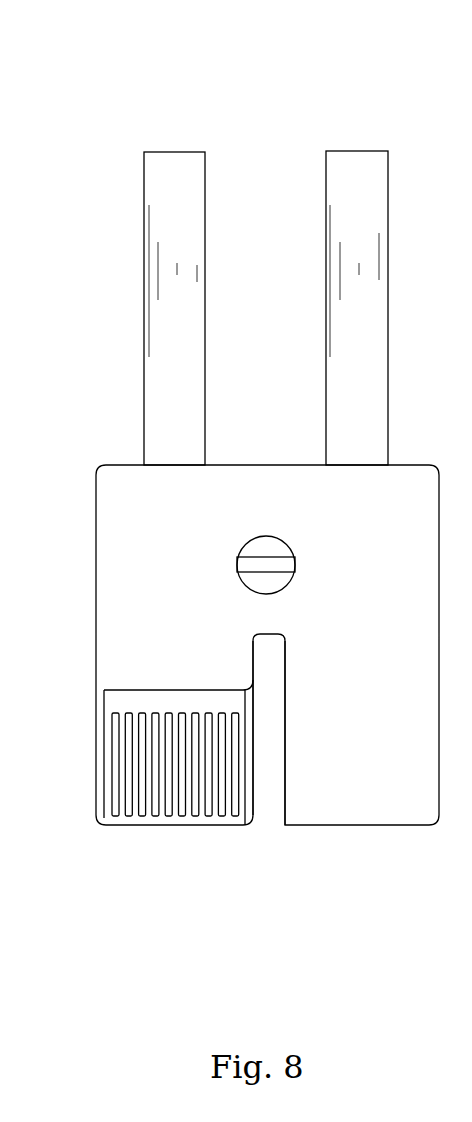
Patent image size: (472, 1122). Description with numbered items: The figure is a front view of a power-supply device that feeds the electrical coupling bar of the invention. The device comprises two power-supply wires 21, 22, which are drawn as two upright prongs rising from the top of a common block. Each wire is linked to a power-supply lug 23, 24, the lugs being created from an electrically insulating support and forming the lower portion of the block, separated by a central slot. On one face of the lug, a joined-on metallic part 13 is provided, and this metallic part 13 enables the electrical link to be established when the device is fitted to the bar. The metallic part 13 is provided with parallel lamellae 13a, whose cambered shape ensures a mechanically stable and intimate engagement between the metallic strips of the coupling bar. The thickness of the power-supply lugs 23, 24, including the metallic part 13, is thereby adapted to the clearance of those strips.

The metallic part 13 is at (252, 807).
The parallel lamellae 13a is at (142, 750).
The power-supply wire 21 is at (384, 173).
The power-supply wire 22 is at (203, 174).
The power-supply lug 23 is at (390, 831).
The power-supply lug 24 is at (135, 823).